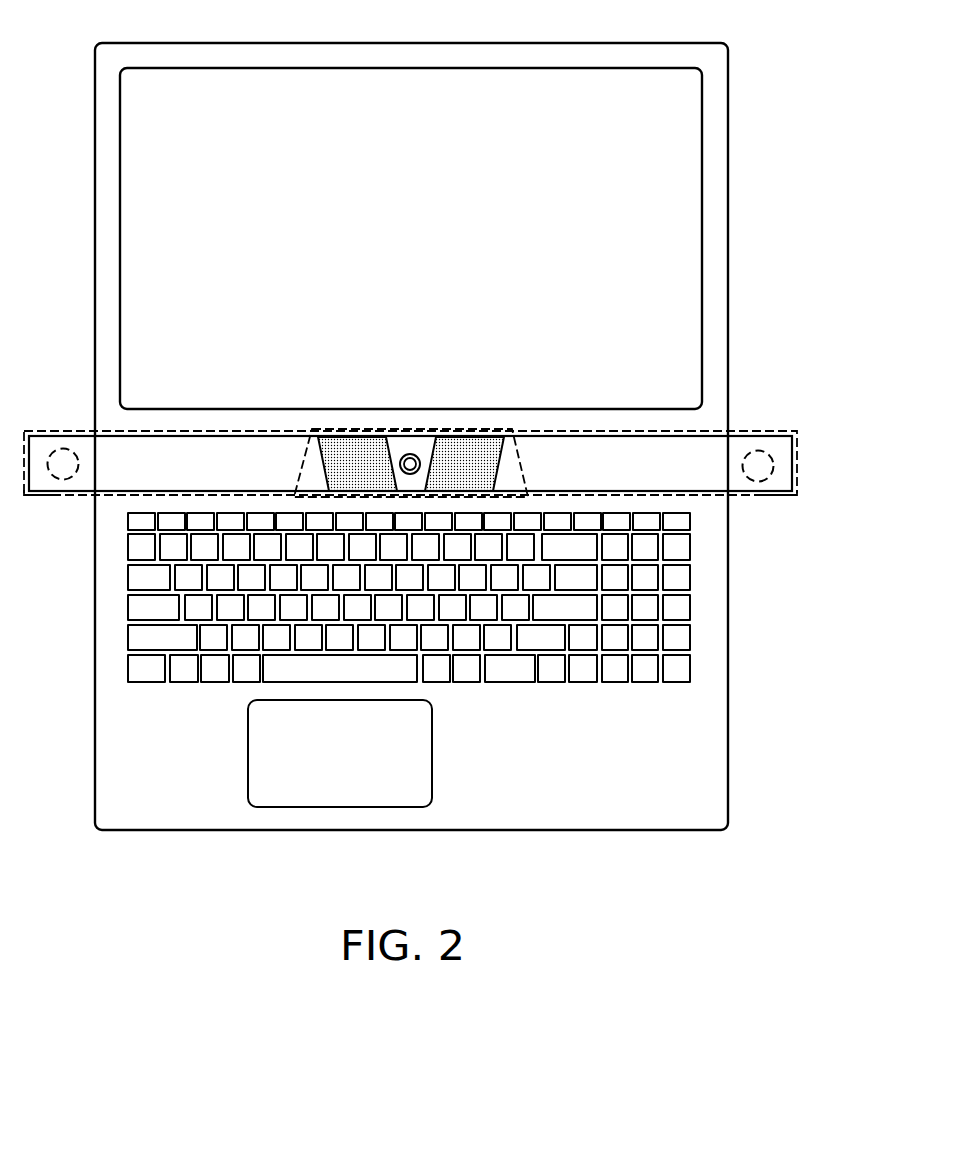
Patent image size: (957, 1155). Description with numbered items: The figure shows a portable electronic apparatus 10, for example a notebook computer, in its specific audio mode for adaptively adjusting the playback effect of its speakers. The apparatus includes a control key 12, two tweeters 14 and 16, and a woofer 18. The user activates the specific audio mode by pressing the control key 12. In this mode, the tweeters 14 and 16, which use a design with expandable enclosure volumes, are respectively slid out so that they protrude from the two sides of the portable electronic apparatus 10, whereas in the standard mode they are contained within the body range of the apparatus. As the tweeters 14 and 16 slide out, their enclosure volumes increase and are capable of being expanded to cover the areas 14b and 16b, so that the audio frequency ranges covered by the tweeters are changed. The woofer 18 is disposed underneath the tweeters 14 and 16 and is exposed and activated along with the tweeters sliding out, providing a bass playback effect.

The portable electronic apparatus 10 is at (728, 658).
The control key 12 is at (410, 453).
The tweeter 14 is at (59, 432).
The area 14b is at (58, 496).
The tweeter 16 is at (768, 435).
The area 16b is at (769, 497).
The woofer 18 is at (498, 428).